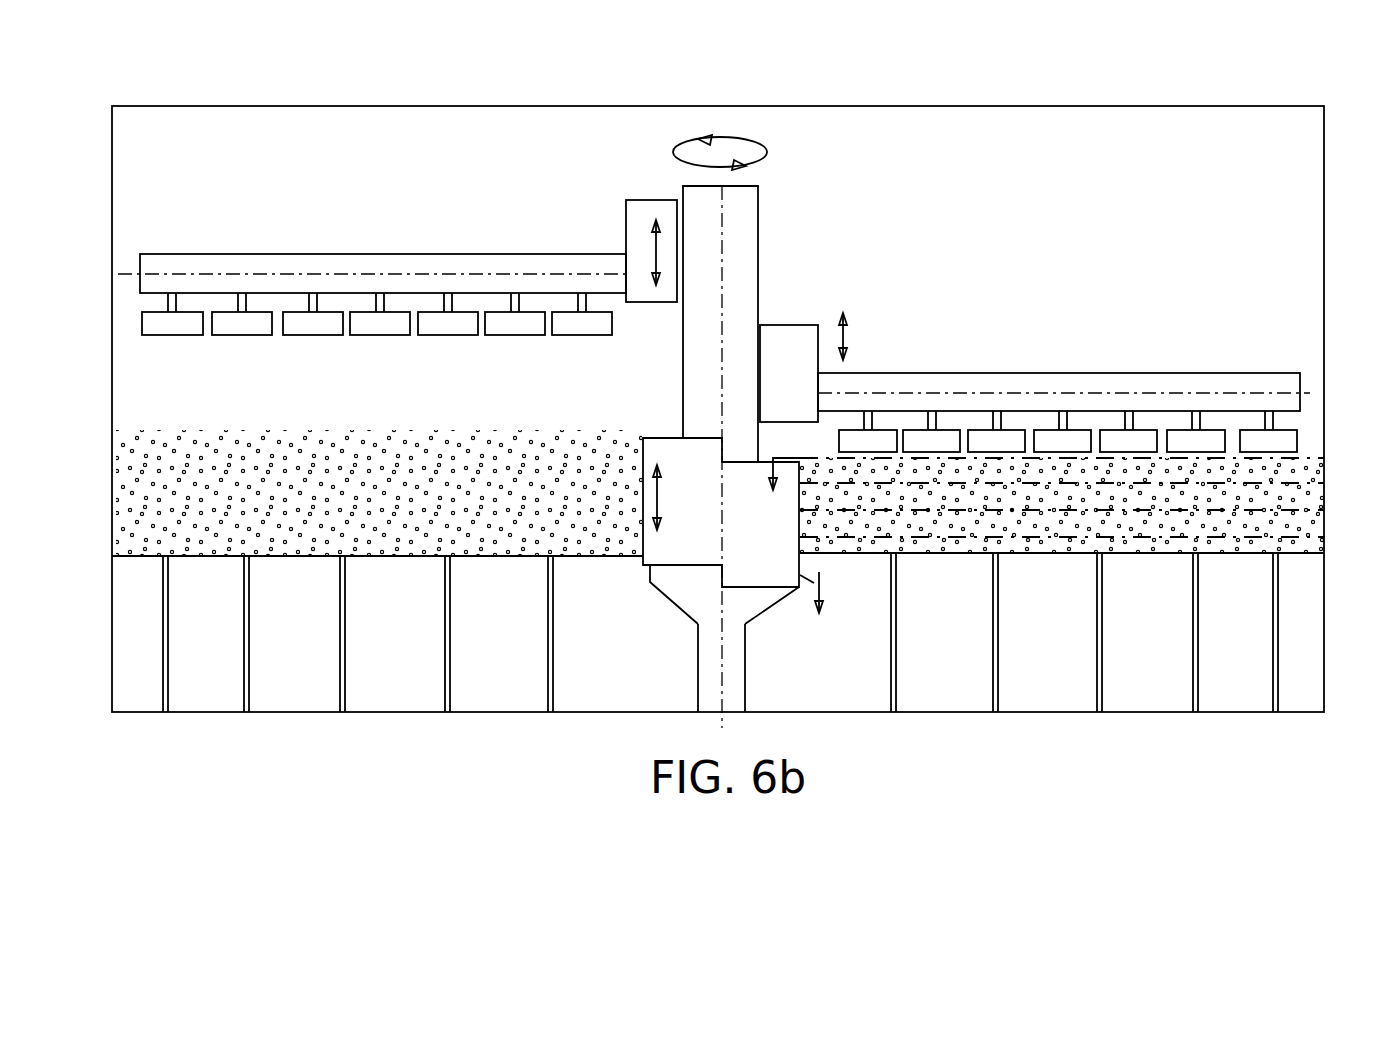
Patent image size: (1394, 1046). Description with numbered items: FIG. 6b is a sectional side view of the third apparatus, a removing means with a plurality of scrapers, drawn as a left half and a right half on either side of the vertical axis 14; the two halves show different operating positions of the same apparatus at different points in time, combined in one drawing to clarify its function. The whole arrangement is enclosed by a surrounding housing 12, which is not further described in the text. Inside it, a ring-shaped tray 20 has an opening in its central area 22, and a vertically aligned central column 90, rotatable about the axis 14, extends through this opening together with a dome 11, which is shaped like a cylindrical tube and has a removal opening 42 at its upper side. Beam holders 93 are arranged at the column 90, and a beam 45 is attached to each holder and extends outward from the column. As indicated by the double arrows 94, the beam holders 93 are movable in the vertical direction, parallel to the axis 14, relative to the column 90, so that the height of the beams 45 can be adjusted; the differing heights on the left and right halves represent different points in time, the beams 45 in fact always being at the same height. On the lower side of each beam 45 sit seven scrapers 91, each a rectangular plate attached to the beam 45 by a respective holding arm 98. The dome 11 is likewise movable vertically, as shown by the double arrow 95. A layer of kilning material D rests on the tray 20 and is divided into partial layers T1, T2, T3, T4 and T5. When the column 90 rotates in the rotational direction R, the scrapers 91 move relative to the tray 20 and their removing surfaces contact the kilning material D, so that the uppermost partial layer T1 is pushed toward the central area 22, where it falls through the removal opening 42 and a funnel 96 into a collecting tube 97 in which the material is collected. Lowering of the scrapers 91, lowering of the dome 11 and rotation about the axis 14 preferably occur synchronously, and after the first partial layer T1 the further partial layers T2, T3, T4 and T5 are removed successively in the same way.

The dome 11 is at (665, 440).
The housing 12 is at (1326, 213).
The vertical axis 14 is at (724, 184).
The ring-shaped tray 20 is at (200, 558).
The central area 22 is at (643, 562).
The removal opening 42 is at (667, 448).
The beam 45 is at (530, 255).
The central column 90 is at (760, 218).
The scraper 91 is at (168, 327).
The beam holder 93 is at (650, 205).
The double arrow 94 is at (657, 248).
The double arrow 95 is at (662, 497).
The funnel 96 is at (765, 620).
The collecting tube 97 is at (745, 686).
The holding arm 98 is at (172, 302).
The layer of kilning material D is at (400, 437).
The rotational direction R is at (720, 138).
The first partial layer T1 is at (1318, 445).
The second partial layer T2 is at (1316, 468).
The third partial layer T3 is at (1318, 500).
The fourth partial layer T4 is at (1322, 528).
The fifth partial layer T5 is at (1318, 545).